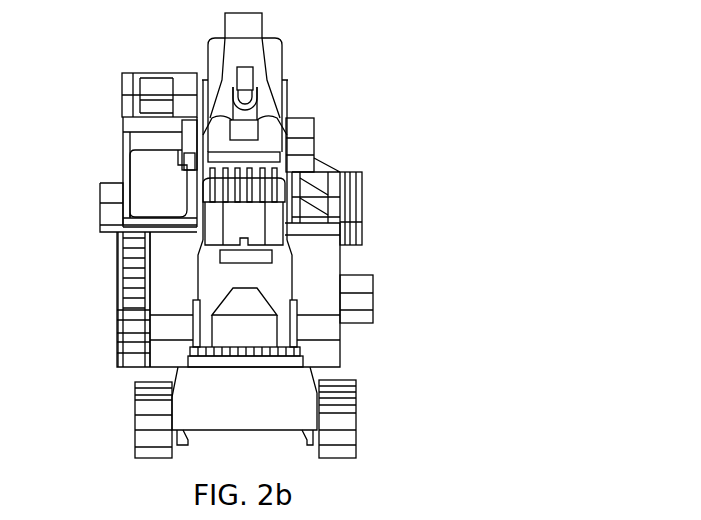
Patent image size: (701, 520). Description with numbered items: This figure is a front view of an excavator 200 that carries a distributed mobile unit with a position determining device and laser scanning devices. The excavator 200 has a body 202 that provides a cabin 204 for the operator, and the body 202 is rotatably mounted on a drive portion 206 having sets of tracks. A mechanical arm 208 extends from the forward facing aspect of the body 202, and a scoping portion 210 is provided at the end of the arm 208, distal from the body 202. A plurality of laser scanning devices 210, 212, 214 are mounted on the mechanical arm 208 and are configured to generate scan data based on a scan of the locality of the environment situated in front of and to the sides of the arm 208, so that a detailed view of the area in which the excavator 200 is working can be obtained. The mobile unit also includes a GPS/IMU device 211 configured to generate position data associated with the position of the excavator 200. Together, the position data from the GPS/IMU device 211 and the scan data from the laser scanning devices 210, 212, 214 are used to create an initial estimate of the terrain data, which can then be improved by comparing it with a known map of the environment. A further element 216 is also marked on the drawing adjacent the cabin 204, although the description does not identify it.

The excavator 200 is at (516, 54).
The body 202 is at (374, 277).
The cabin 204 is at (332, 73).
The drive portion 206 is at (357, 410).
The mechanical arm 208 is at (281, 40).
The scoping portion 210 is at (202, 242).
The GPS/IMU device 211 is at (352, 220).
The laser scanning device 212 is at (315, 156).
The laser scanning device 214 is at (182, 157).
The post 216 is at (179, 160).